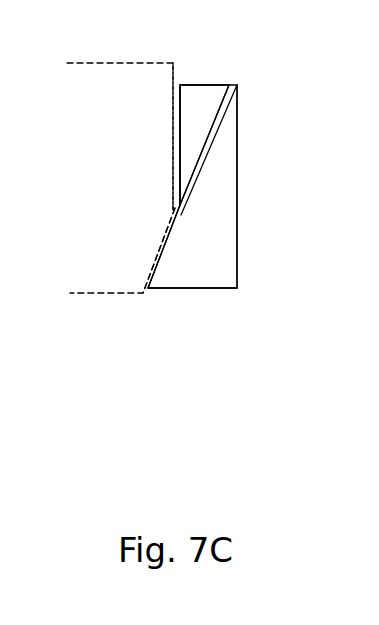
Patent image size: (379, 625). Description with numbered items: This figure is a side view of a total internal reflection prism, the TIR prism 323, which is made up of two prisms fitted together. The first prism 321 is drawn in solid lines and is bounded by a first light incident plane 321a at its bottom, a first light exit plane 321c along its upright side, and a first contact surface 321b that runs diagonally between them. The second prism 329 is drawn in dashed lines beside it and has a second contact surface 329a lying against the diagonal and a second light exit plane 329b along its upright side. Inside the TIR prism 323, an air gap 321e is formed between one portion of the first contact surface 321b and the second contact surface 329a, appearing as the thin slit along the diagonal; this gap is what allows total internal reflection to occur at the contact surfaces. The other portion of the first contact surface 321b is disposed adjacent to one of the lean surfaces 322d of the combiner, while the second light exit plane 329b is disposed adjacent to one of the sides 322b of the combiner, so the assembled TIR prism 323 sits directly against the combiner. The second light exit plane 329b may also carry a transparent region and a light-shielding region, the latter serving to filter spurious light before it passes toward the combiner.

The first prism 321 is at (233, 267).
The first light incident plane 321a is at (196, 290).
The first contact surface 321b is at (200, 182).
The first light exit plane 321c is at (243, 163).
The air gap 321e is at (183, 196).
The TIR prism 323 is at (303, 370).
The second prism 329 is at (186, 152).
The second contact surface 329a is at (215, 112).
The second light exit plane 329b is at (176, 127).
The side of the combiner 322b is at (169, 102).
The lean surface of the combiner 322d is at (146, 268).